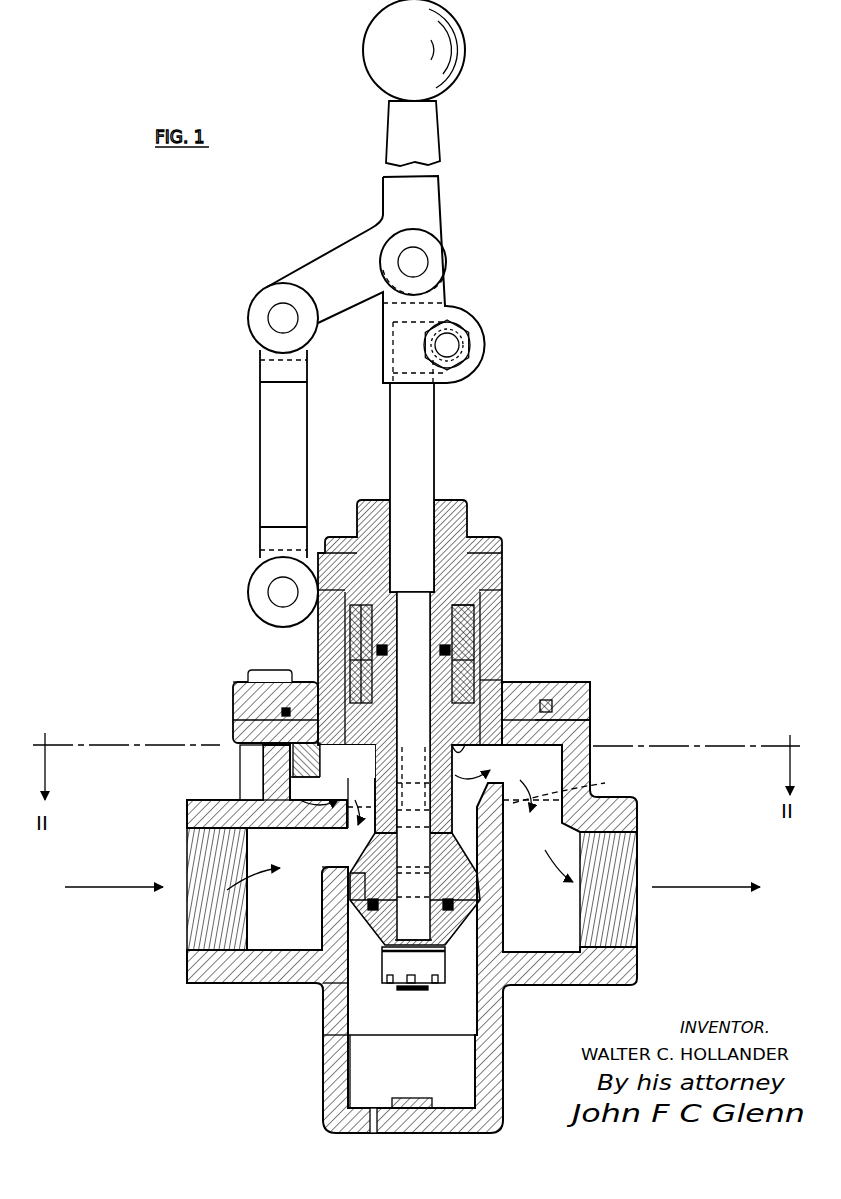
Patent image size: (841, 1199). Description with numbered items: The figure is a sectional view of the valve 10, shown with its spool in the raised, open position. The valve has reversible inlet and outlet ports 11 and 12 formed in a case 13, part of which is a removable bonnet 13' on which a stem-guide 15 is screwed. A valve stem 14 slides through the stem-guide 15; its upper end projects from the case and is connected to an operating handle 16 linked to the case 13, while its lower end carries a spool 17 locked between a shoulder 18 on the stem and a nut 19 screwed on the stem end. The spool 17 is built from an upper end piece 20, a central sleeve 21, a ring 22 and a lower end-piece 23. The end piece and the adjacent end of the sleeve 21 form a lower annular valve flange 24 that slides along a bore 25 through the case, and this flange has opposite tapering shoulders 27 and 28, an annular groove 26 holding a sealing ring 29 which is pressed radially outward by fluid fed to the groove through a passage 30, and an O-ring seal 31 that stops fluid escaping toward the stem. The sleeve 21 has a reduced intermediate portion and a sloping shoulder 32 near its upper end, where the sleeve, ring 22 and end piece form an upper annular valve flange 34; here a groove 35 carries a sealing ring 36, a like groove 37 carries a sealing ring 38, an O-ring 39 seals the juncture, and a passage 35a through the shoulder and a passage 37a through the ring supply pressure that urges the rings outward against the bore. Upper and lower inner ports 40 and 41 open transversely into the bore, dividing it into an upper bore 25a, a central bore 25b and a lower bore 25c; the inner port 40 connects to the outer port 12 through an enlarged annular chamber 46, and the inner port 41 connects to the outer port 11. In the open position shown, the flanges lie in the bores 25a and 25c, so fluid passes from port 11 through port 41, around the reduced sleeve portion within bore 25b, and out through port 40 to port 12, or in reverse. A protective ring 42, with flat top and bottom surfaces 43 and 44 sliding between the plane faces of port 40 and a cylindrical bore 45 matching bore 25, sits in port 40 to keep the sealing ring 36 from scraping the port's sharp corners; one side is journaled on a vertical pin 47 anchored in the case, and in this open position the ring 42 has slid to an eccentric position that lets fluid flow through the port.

The valve 10 is at (242, 345).
The outer port 11 is at (205, 895).
The outer port 12 is at (618, 873).
The case 13 is at (441, 1071).
The removable bonnet 13' is at (481, 627).
The valve stem 14 is at (433, 424).
The stem-guide 15 is at (498, 538).
The operating handle 16 is at (440, 125).
The spool 17 is at (540, 690).
The shoulder 18 is at (420, 592).
The nut 19 is at (445, 965).
The upper end piece 20 is at (470, 610).
The central sleeve 21 is at (573, 690).
The ring 22 is at (500, 660).
The lower end-piece 23 is at (500, 990).
The lower annular valve flange 24 is at (483, 905).
The bore 25 is at (345, 1025).
The upper bore 25a is at (248, 668).
The central bore 25b is at (280, 808).
The lower bore 25c is at (345, 1003).
The annular groove 26 is at (345, 905).
The tapering shoulder 27 is at (342, 845).
The tapering shoulder 28 is at (300, 984).
The annular sealing ring 29 is at (330, 875).
The passage 30 is at (298, 858).
The O-ring seal 31 is at (380, 948).
The sloping shoulder 32 is at (290, 680).
The upper annular valve flange 34 is at (487, 640).
The groove 35 is at (507, 665).
The passage 35a is at (360, 745).
The sealing ring 36 is at (515, 680).
The groove 37 is at (486, 588).
The passage 37a is at (340, 628).
The sealing ring 38 is at (477, 628).
The O-ring 39 is at (345, 655).
The upper inner port 40 is at (592, 721).
The lower inner port 41 is at (260, 827).
The protective ring 42 is at (575, 775).
The top surface 43 is at (245, 733).
The bottom surface 44 is at (258, 790).
The cylindrical bore 45 is at (240, 695).
The enlarged annular chamber 46 is at (592, 690).
The vertical pin 47 is at (605, 783).